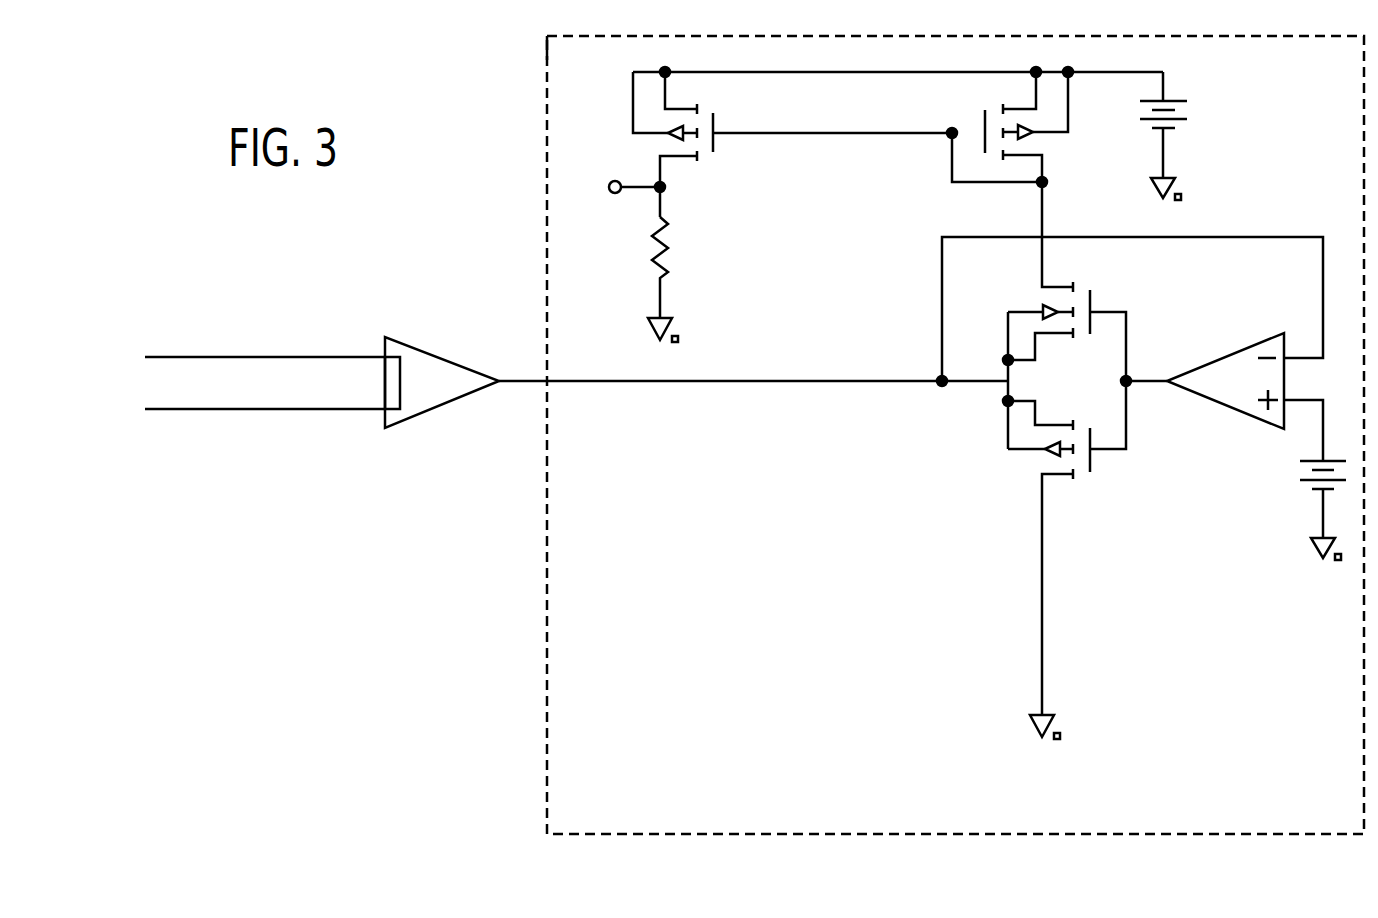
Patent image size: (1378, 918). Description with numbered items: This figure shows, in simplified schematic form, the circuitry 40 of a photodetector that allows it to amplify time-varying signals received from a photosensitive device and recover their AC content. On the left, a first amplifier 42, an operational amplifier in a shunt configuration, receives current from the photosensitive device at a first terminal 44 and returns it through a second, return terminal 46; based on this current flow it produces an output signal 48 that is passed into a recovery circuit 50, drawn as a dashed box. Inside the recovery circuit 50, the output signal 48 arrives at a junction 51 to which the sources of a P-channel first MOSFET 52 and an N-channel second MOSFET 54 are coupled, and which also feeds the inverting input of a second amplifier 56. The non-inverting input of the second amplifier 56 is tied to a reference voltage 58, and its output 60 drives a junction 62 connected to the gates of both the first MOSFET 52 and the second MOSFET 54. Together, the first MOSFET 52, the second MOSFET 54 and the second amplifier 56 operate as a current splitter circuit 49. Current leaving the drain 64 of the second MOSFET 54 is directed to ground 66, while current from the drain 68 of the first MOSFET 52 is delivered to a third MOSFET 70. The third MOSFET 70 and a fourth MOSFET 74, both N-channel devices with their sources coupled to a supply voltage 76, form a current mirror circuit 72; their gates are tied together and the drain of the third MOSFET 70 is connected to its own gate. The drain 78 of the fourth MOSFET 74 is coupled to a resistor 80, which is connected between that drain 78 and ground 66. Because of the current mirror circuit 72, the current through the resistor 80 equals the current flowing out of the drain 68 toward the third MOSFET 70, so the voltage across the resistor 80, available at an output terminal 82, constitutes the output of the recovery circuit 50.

The circuitry 40 is at (443, 552).
The first amplifier 42 is at (448, 403).
The first terminal 44 is at (375, 345).
The second, return terminal 46 is at (378, 402).
The output signal 48 is at (508, 370).
The current splitter circuit 49 is at (975, 445).
The recovery circuit 50 is at (538, 188).
The junction 51 is at (940, 398).
The first MOSFET 52 is at (1108, 292).
The second MOSFET 54 is at (1108, 472).
The second amplifier 56 is at (1225, 405).
The reference voltage 58 is at (1333, 388).
The output 60 is at (1163, 392).
The junction 62 is at (1140, 365).
The drain 64 is at (1030, 470).
The ground 66 is at (645, 345).
The drain 68 is at (1028, 292).
The third MOSFET 70 is at (1085, 82).
The current mirror circuit 72 is at (622, 69).
The fourth MOSFET 74 is at (722, 148).
The supply voltage 76 is at (1178, 62).
The drain 78 is at (648, 155).
The resistor 80 is at (682, 245).
The output terminal 82 is at (620, 205).